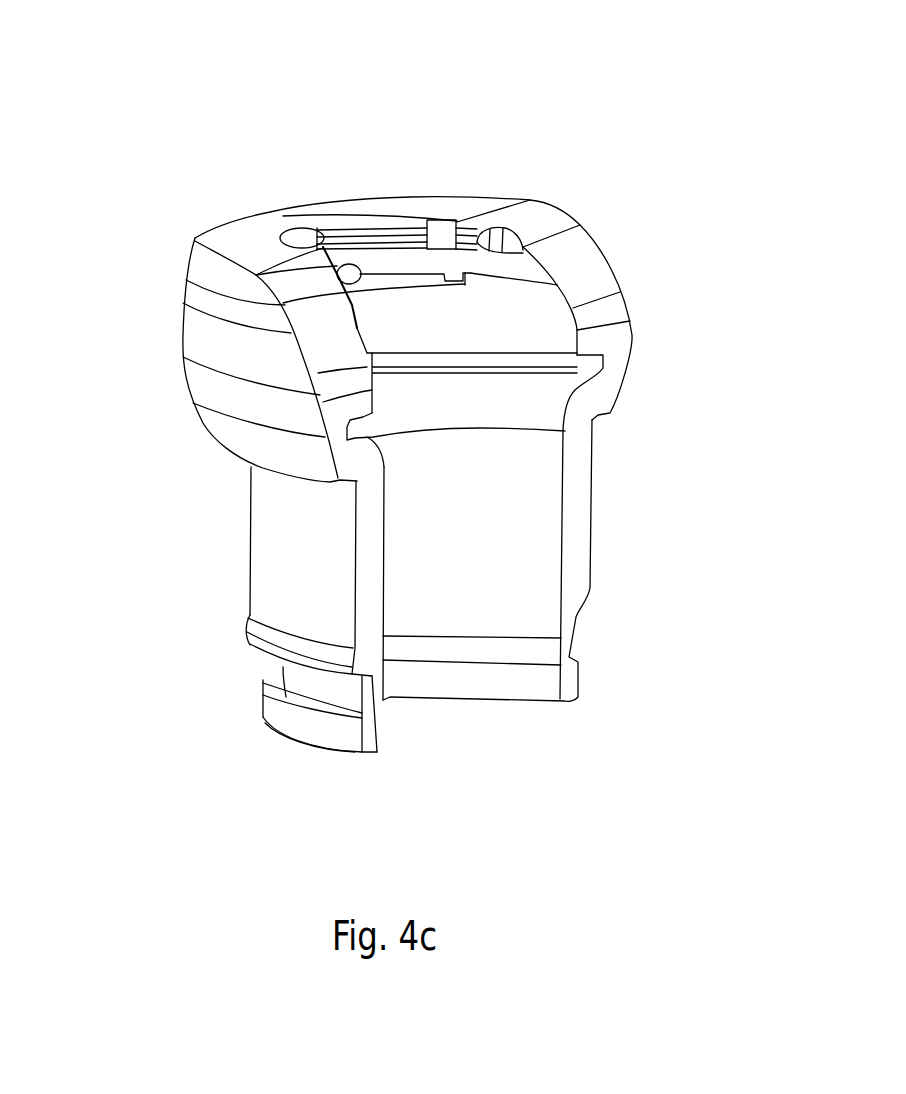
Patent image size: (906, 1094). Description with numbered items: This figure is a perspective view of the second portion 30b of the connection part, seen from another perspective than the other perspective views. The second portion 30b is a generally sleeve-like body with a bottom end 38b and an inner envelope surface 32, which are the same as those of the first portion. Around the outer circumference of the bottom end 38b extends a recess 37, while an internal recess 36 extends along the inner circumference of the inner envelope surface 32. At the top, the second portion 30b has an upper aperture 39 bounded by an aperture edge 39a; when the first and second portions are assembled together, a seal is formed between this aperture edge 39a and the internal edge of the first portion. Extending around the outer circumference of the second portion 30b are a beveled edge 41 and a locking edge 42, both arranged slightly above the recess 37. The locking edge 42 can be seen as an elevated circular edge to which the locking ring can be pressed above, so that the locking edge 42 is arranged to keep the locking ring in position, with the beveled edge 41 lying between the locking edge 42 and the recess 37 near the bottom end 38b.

The second portion 30b is at (692, 230).
The upper aperture 39 is at (373, 253).
The aperture edge 39a is at (315, 240).
The internal recess 36 is at (578, 364).
The inner envelope surface 32 is at (457, 597).
The locking edge 42 is at (250, 630).
The beveled edge 41 is at (268, 658).
The recess 37 is at (283, 668).
The bottom end 38b is at (350, 753).